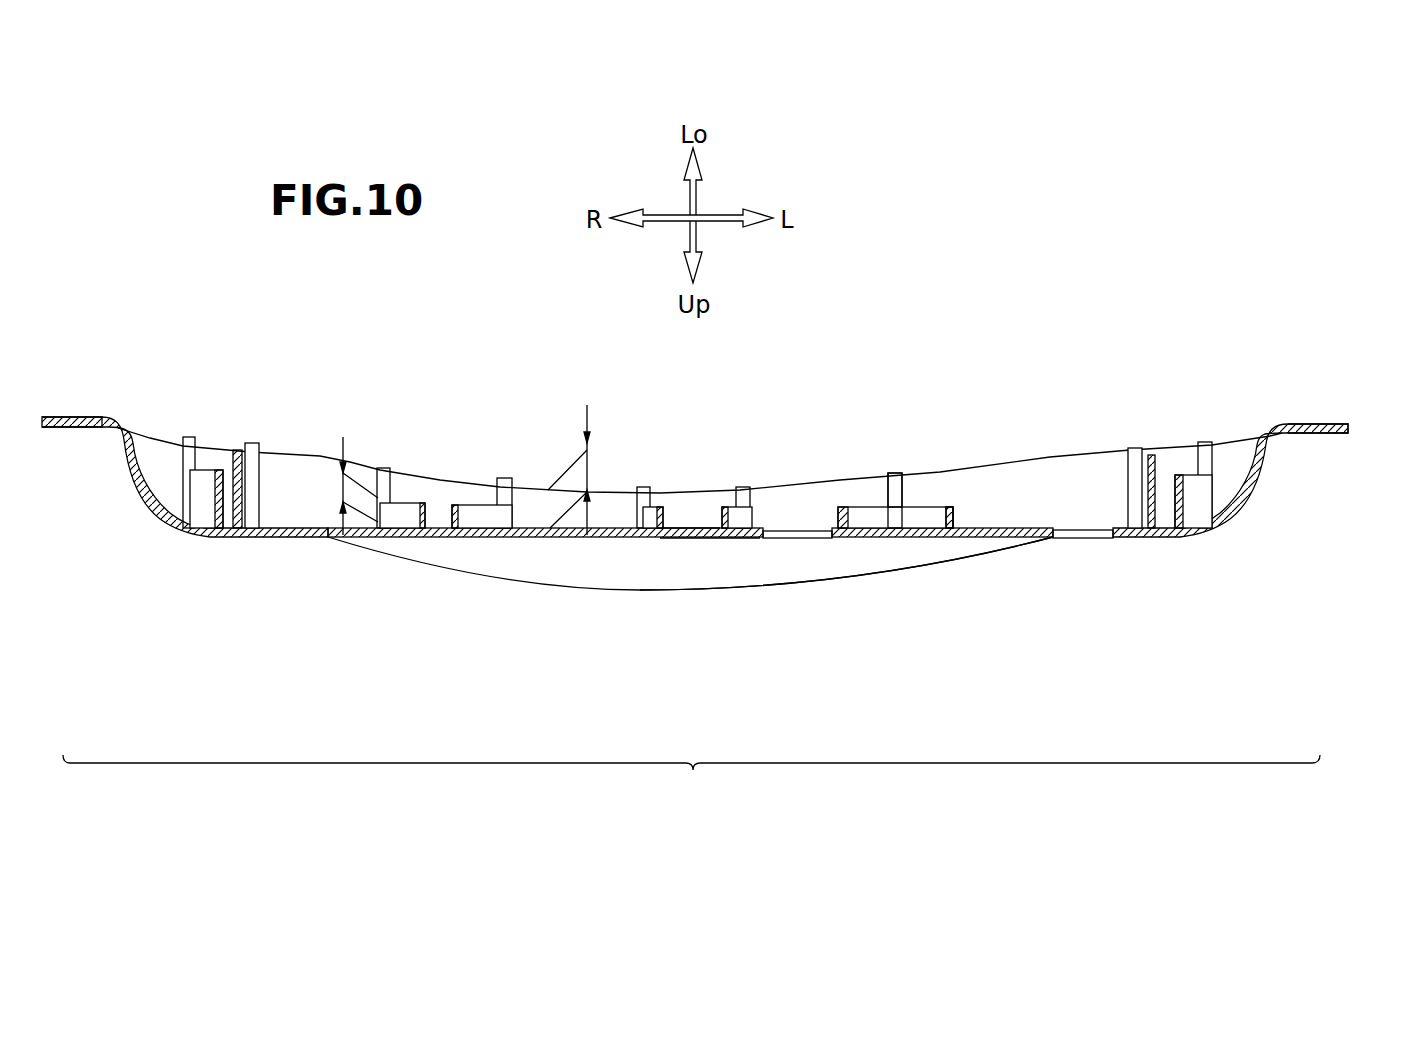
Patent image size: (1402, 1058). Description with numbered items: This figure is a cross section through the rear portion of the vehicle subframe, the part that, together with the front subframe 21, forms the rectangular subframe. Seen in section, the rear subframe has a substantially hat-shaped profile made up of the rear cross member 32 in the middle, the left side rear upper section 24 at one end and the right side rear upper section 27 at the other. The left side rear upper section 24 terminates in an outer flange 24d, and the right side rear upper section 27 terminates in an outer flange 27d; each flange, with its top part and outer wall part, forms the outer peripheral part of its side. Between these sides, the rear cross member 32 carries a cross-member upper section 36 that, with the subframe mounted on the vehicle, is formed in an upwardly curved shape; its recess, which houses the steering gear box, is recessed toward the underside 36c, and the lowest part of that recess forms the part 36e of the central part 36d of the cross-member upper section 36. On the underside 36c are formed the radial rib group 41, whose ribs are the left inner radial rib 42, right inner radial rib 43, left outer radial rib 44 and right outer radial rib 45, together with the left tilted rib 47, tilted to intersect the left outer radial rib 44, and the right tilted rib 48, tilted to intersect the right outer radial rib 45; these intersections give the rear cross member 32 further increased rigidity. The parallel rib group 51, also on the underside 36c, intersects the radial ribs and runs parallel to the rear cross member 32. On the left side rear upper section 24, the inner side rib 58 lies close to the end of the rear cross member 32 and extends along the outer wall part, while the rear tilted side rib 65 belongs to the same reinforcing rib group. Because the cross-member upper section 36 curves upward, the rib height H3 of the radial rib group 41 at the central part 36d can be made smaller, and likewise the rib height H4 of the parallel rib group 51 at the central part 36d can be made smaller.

The front subframe 21 is at (691, 780).
The left side rear upper section 24 is at (1243, 520).
The outer flange 24d is at (1317, 437).
The right side rear upper section 27 is at (140, 503).
The outer flange 27d is at (72, 428).
The rear cross member 32 is at (640, 590).
The cross-member upper section 36 is at (890, 571).
The underside 36c is at (687, 528).
The central part 36d is at (790, 576).
The lowest part of the recess 36e is at (708, 538).
The radial rib group 41 is at (958, 512).
The left inner radial rib 42 is at (740, 515).
The right inner radial rib 43 is at (636, 521).
The left outer radial rib 44 is at (863, 517).
The right outer radial rib 45 is at (400, 515).
The left tilted rib 47 is at (927, 517).
The right tilted rib 48 is at (477, 515).
The parallel rib group 51 is at (836, 486).
The inner side rib 58 is at (248, 465).
The rear tilted side rib 65 is at (200, 493).
The rib height H3 is at (340, 487).
The rib height H4 is at (592, 467).